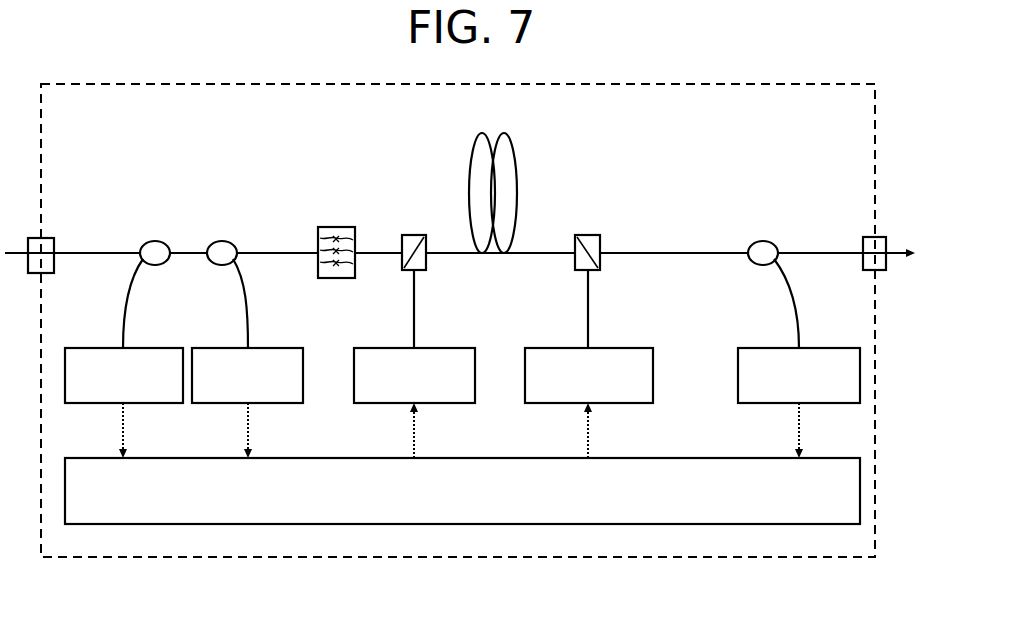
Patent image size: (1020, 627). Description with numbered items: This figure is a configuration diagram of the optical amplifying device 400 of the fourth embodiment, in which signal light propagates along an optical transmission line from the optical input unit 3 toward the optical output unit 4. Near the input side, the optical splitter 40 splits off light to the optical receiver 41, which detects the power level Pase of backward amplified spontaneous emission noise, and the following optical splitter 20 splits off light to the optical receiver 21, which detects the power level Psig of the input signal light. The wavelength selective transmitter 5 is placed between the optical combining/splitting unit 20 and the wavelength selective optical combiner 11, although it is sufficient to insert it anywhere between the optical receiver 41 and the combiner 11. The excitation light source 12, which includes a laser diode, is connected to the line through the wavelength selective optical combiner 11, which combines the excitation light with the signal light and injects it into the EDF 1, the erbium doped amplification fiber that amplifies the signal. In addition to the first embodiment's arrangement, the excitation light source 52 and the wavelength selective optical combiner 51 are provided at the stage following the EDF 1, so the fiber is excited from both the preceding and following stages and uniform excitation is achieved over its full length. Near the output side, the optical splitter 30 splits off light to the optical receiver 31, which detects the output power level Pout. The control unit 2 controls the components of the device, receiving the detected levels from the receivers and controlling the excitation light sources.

The optical amplifying device 400 is at (820, 84).
The optical input unit 3 is at (50, 238).
The optical output unit 4 is at (886, 240).
The optical splitter 40 is at (155, 241).
The optical splitter 20 is at (222, 241).
The wavelength selective transmitter 5 is at (337, 227).
The wavelength selective optical combiner 11 is at (415, 235).
The EDF 1 is at (512, 143).
The wavelength selective optical combiner 51 is at (588, 235).
The optical splitter 30 is at (762, 241).
The optical receiver 41 is at (88, 348).
The optical receiver 21 is at (285, 348).
The excitation light source 12 is at (443, 348).
The excitation light source 52 is at (598, 348).
The optical receiver 31 is at (738, 362).
The control unit 2 is at (470, 458).